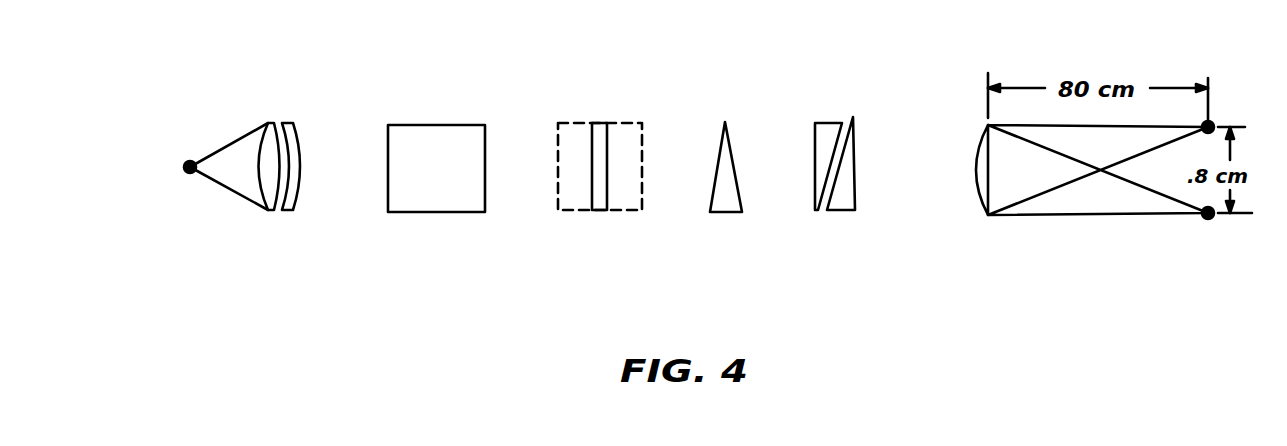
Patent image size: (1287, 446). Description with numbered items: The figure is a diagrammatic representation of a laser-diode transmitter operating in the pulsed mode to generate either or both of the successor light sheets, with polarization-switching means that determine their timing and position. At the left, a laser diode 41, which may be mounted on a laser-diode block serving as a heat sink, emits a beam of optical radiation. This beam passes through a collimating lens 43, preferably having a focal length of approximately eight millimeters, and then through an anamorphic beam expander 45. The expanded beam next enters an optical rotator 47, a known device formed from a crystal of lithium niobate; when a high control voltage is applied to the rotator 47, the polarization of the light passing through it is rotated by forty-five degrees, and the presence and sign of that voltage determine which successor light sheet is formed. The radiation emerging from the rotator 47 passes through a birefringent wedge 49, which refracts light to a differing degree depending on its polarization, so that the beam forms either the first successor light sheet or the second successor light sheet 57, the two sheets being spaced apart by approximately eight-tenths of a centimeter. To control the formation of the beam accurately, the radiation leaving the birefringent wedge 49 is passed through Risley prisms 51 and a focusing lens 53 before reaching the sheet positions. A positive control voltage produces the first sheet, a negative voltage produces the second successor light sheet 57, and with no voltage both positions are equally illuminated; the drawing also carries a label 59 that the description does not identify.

The laser diode 41 is at (190, 167).
The collimating lens 43 is at (302, 186).
The anamorphic beam expander 45 is at (455, 125).
The optical rotator 47 is at (603, 210).
The birefringent wedge 49 is at (730, 137).
The Risley prisms 51 is at (818, 210).
The focusing lens 53 is at (1208, 127).
The second successor light sheet 57 is at (1210, 216).
The focusing lens 59 is at (978, 193).